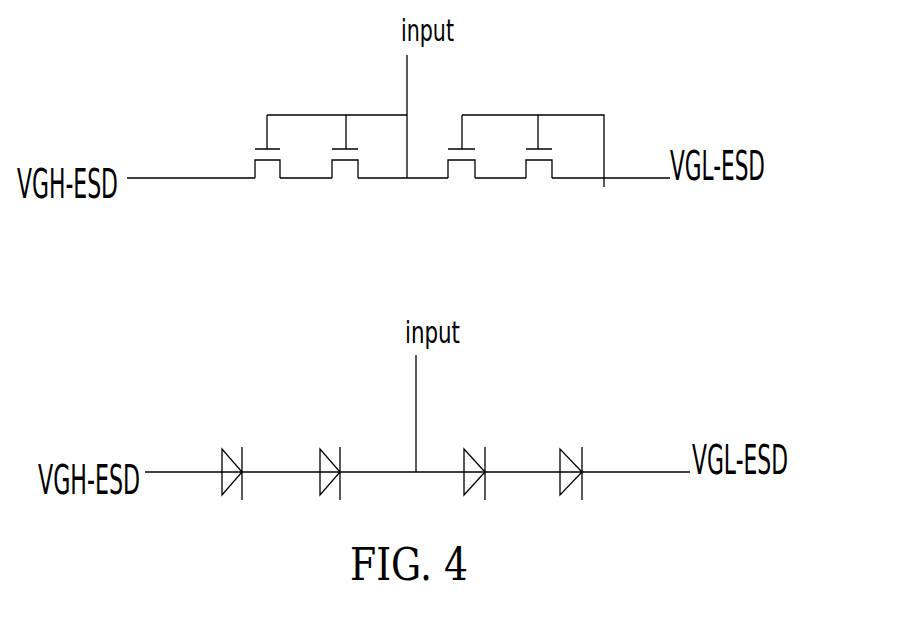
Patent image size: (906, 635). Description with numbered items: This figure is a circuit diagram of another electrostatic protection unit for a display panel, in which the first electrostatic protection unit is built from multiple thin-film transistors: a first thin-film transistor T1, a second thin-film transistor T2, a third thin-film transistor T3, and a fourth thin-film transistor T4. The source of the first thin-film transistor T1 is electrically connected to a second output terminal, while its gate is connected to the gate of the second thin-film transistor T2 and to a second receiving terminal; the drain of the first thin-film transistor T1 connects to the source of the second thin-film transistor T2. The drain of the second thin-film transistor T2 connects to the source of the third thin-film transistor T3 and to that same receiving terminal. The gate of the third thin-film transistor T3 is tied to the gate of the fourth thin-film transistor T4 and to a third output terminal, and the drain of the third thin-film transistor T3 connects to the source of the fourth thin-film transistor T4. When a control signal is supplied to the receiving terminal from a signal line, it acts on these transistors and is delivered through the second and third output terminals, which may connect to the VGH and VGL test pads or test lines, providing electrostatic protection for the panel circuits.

The first thin-film transistor T1 is at (268, 172).
The second thin-film transistor T2 is at (346, 172).
The third thin-film transistor T3 is at (461, 172).
The fourth thin-film transistor T4 is at (540, 172).